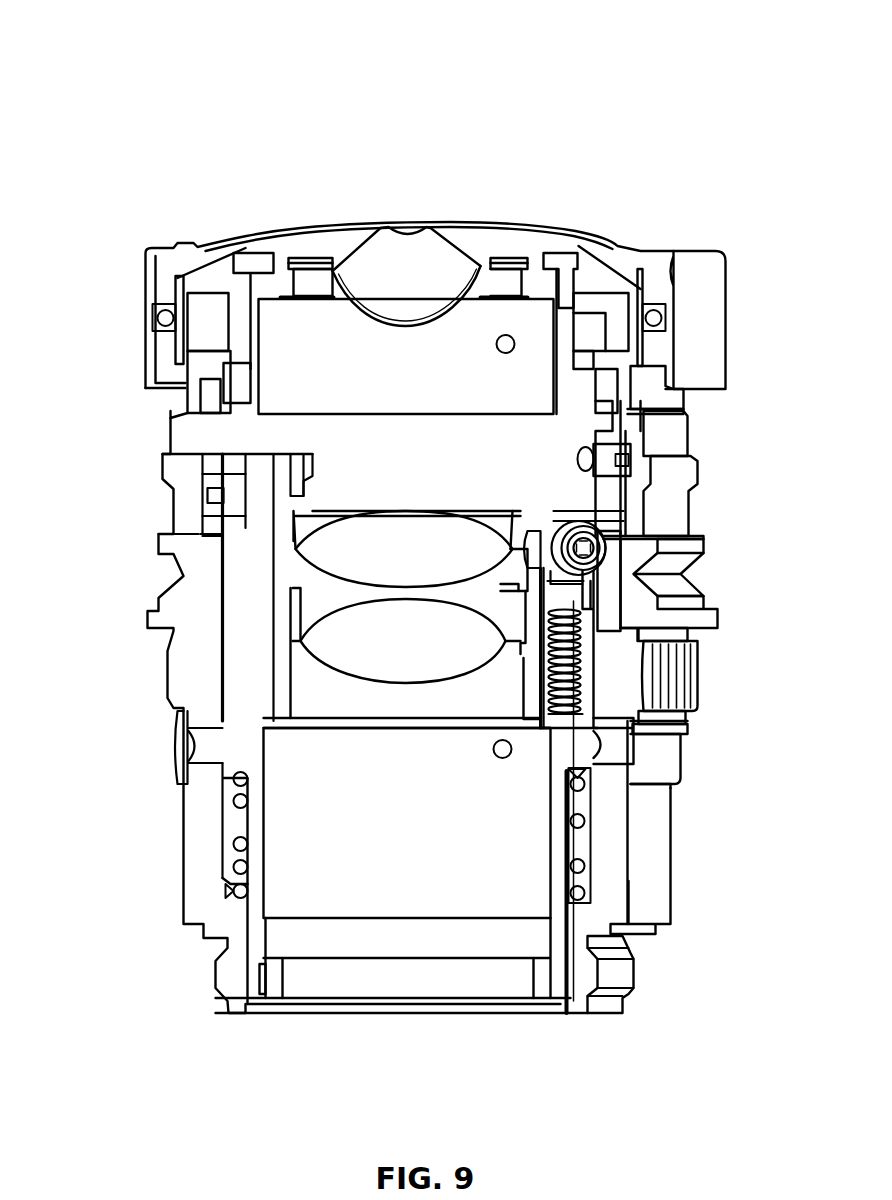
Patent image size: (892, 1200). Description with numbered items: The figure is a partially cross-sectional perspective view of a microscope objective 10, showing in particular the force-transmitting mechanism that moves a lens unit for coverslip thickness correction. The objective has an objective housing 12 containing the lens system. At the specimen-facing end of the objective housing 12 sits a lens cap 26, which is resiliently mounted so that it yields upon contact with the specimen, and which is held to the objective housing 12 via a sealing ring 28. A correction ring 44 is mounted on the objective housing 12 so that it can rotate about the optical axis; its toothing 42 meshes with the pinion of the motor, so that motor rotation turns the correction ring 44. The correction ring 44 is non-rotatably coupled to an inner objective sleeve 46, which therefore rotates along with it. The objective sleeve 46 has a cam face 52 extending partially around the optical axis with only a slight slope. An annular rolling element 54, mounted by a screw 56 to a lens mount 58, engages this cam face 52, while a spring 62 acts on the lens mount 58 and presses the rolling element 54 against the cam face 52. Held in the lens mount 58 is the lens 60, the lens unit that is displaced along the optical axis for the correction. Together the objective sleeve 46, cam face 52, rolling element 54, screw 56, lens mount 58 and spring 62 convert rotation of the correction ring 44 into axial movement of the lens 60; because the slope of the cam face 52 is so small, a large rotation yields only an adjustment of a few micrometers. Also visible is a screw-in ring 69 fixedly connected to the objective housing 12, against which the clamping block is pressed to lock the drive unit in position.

The microscope objective 10 is at (150, 81).
The objective housing 12 is at (670, 900).
The lens cap 26 is at (148, 270).
The sealing ring 28 is at (157, 313).
The toothing 42 is at (692, 470).
The correction ring 44 is at (695, 450).
The inner objective sleeve 46 is at (370, 460).
The cam face 52 is at (337, 510).
The annular rolling element 54 is at (556, 534).
The screw 56 is at (512, 547).
The lens mount 58 is at (532, 690).
The lens 60 is at (363, 655).
The spring 62 is at (580, 667).
The screw-in ring 69 is at (695, 680).